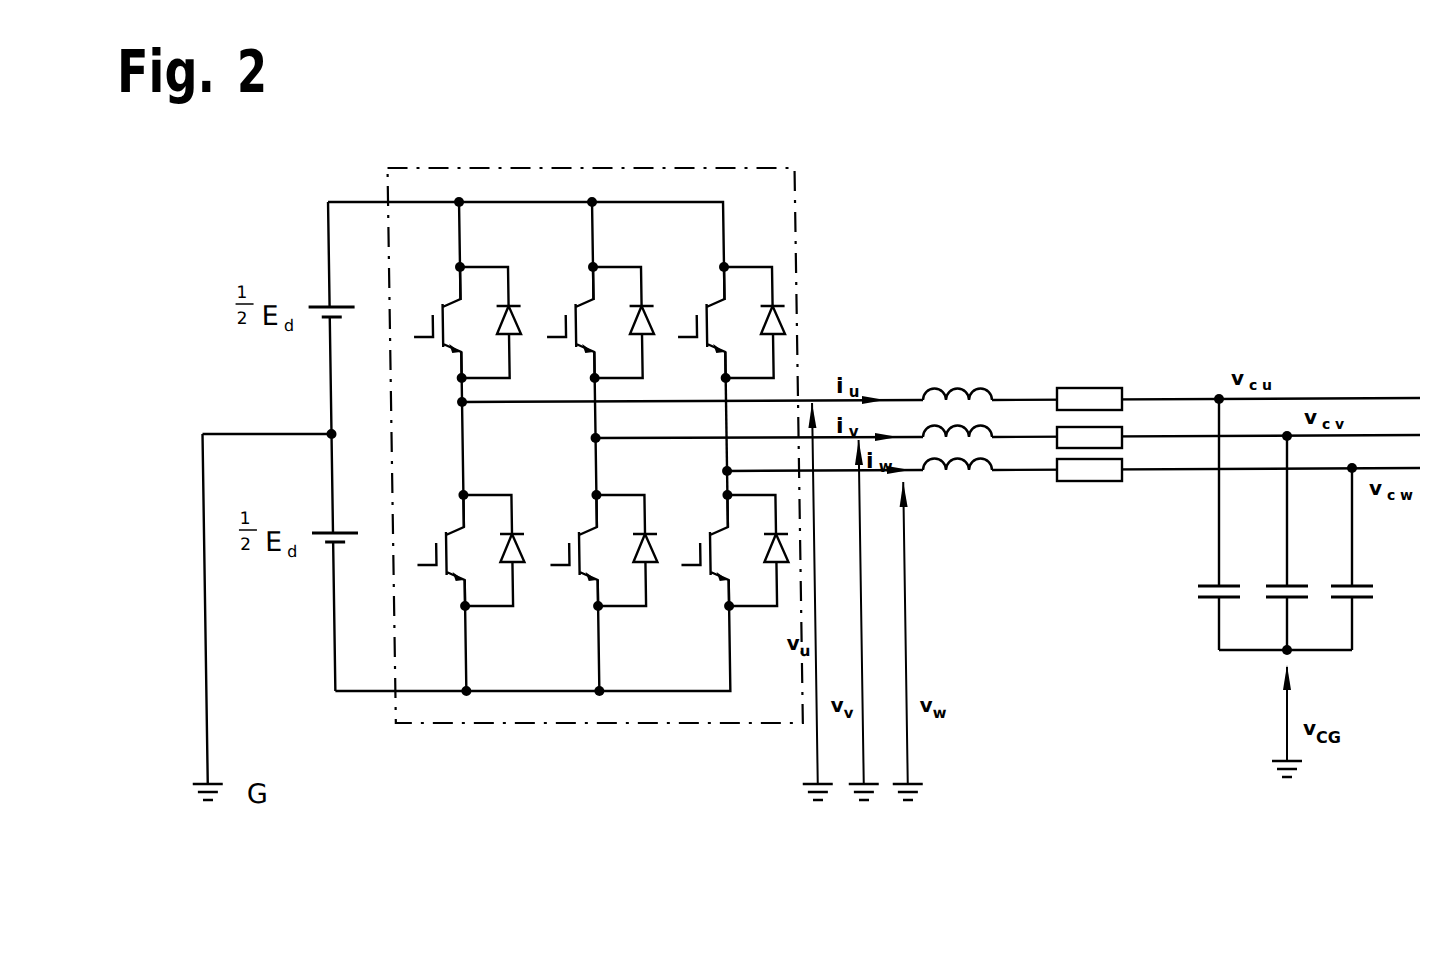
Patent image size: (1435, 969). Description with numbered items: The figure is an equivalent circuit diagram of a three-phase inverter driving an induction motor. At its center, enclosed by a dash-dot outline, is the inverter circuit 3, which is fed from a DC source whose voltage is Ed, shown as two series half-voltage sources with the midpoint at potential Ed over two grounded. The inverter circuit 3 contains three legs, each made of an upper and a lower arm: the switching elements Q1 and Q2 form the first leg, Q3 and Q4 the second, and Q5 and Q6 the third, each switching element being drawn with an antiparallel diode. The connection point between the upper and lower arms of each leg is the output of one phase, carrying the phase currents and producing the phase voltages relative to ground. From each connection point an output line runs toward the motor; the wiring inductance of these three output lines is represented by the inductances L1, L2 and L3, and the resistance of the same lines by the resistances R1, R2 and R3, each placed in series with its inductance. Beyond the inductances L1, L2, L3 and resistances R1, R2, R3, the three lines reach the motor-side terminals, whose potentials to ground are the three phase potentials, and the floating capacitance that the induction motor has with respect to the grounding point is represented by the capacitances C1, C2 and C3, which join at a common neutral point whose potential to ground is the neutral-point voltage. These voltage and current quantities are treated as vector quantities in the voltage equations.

The inverter circuit 3 is at (564, 409).
The switching element Q1 is at (465, 322).
The switching element Q2 is at (468, 550).
The switching element Q3 is at (598, 322).
The switching element Q4 is at (601, 550).
The switching element Q5 is at (730, 322).
The switching element Q6 is at (733, 550).
The wiring inductance L1 is at (957, 386).
The wiring inductance L2 is at (977, 437).
The wiring inductance L3 is at (948, 478).
The resistance R1 is at (1082, 392).
The resistance R2 is at (1105, 437).
The resistance R3 is at (1092, 475).
The floating capacitance C1 is at (1198, 524).
The floating capacitance C2 is at (1294, 543).
The floating capacitance C3 is at (1368, 559).